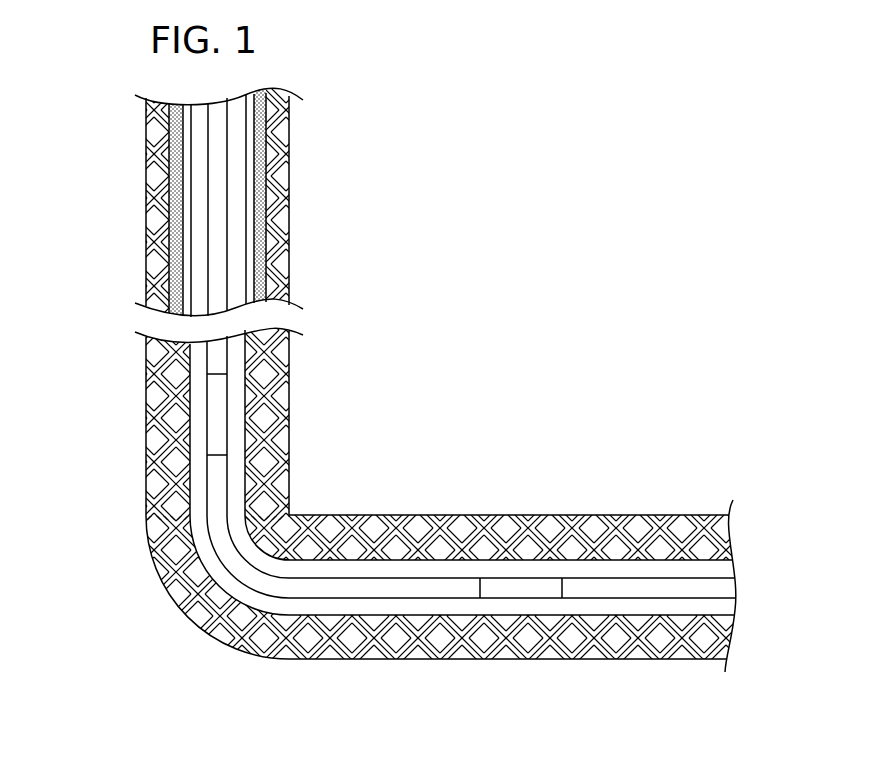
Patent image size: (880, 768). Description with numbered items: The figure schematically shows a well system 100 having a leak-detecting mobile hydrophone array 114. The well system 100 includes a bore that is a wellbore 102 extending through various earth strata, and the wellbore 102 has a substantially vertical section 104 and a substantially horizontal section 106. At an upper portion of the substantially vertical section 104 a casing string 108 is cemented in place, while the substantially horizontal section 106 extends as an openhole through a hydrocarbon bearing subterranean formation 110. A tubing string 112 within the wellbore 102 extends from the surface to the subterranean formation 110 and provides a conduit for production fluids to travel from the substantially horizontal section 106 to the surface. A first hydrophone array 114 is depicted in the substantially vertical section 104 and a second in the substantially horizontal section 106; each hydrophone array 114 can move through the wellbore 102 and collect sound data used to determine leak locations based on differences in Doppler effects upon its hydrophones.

The well system 100 is at (103, 141).
The wellbore 102 is at (248, 432).
The substantially vertical section 104 is at (256, 382).
The substantially horizontal section 106 is at (597, 548).
The casing string 108 is at (266, 203).
The subterranean formation 110 is at (522, 370).
The tubing string 112 is at (228, 471).
The leak-detecting mobile hydrophone array 114 is at (212, 410).